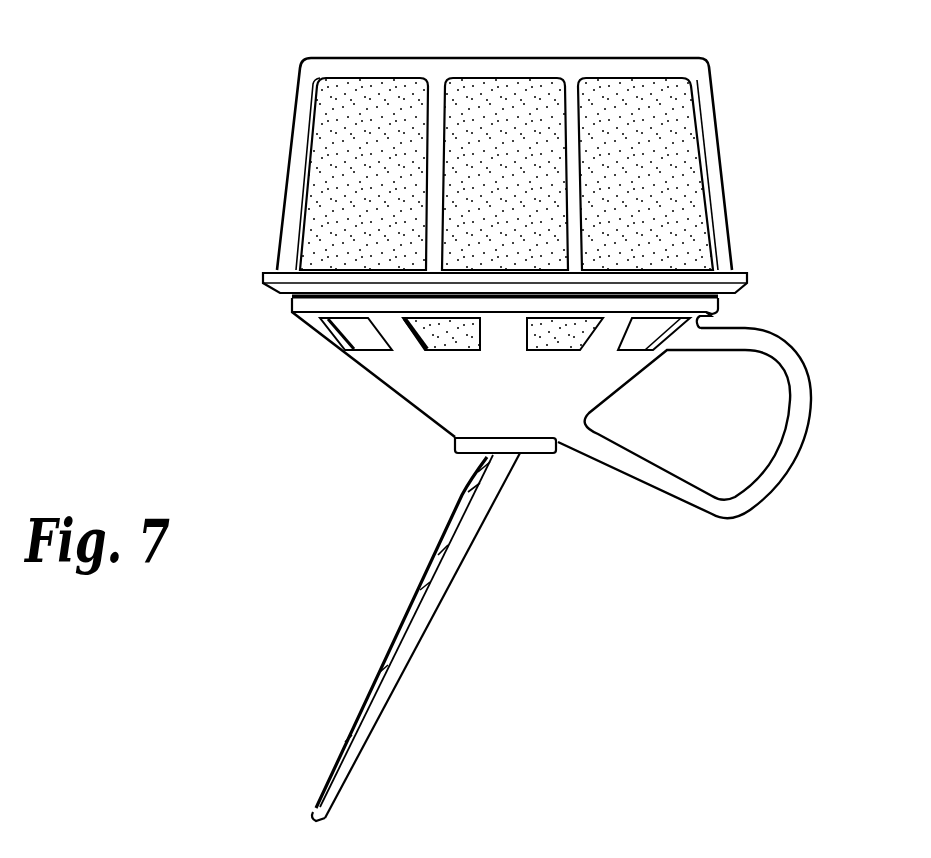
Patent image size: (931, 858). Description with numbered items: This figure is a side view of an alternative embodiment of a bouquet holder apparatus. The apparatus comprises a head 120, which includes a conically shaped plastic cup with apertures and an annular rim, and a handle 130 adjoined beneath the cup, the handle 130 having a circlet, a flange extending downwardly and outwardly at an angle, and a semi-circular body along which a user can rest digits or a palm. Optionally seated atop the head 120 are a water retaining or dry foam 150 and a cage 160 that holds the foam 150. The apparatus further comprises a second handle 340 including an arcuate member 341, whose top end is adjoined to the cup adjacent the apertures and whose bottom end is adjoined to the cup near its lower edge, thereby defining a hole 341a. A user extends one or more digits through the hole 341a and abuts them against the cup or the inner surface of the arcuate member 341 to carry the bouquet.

The cage 160 is at (714, 100).
The foam 150 is at (688, 176).
The head 120 is at (347, 409).
The handle 130 is at (328, 674).
The handle 340 is at (776, 535).
The arcuate member 341 is at (776, 334).
The hole 341a is at (747, 416).